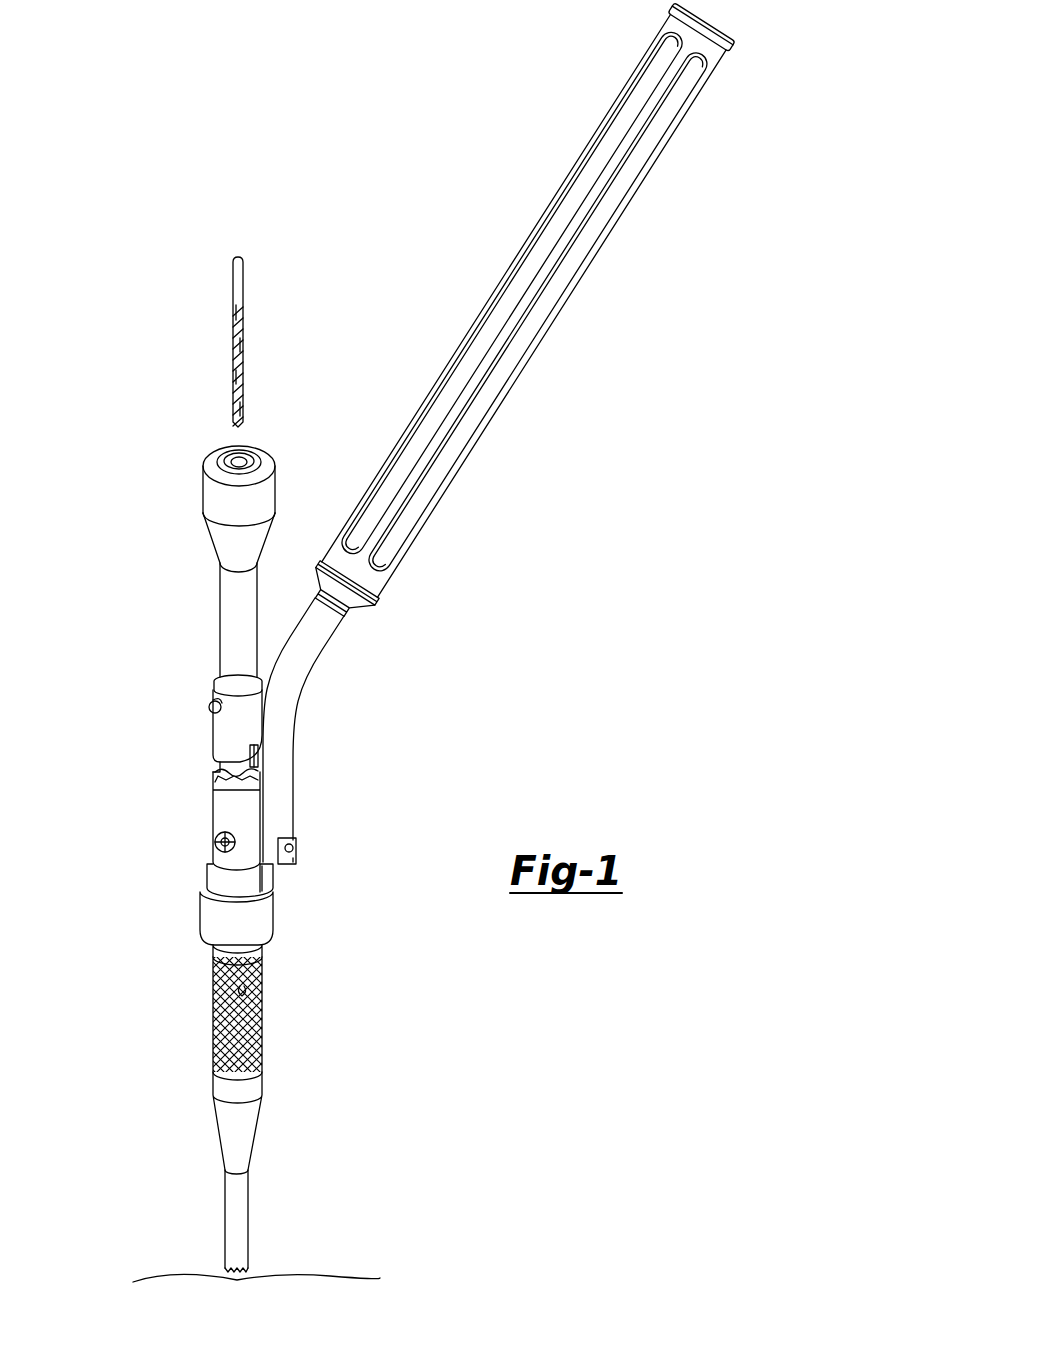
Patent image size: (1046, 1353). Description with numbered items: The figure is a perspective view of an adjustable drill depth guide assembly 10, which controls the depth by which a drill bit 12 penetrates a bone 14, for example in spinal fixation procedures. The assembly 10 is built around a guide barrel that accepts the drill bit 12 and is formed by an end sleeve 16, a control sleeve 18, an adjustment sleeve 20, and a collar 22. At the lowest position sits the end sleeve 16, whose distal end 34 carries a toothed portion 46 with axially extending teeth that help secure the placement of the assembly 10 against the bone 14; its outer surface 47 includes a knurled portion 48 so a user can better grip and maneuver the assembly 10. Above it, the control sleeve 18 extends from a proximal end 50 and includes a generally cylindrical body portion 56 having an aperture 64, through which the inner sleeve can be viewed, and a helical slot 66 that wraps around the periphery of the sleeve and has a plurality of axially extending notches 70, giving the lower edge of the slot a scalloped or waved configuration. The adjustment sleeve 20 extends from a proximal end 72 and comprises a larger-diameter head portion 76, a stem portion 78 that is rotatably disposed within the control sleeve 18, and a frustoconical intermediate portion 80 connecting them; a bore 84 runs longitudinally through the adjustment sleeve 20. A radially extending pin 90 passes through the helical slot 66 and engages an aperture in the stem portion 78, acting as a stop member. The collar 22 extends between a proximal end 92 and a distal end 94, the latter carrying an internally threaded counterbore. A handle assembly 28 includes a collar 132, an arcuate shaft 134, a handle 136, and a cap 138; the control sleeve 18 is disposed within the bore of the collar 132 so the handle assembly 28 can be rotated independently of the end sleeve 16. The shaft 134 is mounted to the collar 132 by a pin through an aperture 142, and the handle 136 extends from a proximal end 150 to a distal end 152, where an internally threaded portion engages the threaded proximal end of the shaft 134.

The adjustable drill depth guide assembly 10 is at (700, 290).
The drill bit 12 is at (207, 283).
The bone 14 is at (330, 1250).
The end sleeve 16 is at (234, 1114).
The control sleeve 18 is at (194, 824).
The adjustment sleeve 20 is at (192, 620).
The collar 22 is at (200, 920).
The handle assembly 28 is at (338, 598).
The distal end of the end sleeve 34 is at (225, 1268).
The toothed portion 46 is at (250, 1270).
The outer surface of the end sleeve 47 is at (247, 990).
The knurled portion 48 is at (222, 1045).
The proximal end of the control sleeve 50 is at (258, 678).
The body portion 56 is at (220, 736).
The aperture 64 is at (222, 845).
The helical slot 66 is at (250, 762).
The notches 70 is at (240, 792).
The proximal end of the adjustment sleeve 72 is at (212, 463).
The head portion 76 is at (192, 474).
The stem portion 78 is at (232, 655).
The intermediate portion 80 is at (233, 540).
The bore 84 is at (244, 455).
The pin 90 is at (208, 705).
The proximal end of the collar 92 is at (265, 892).
The distal end of the collar 94 is at (257, 953).
The collar 132 is at (230, 900).
The shaft 134 is at (327, 731).
The handle 136 is at (565, 344).
The cap 138 is at (701, 27).
The aperture 142 is at (300, 852).
The proximal end of the handle 150 is at (702, 25).
The distal end of the handle 152 is at (347, 583).